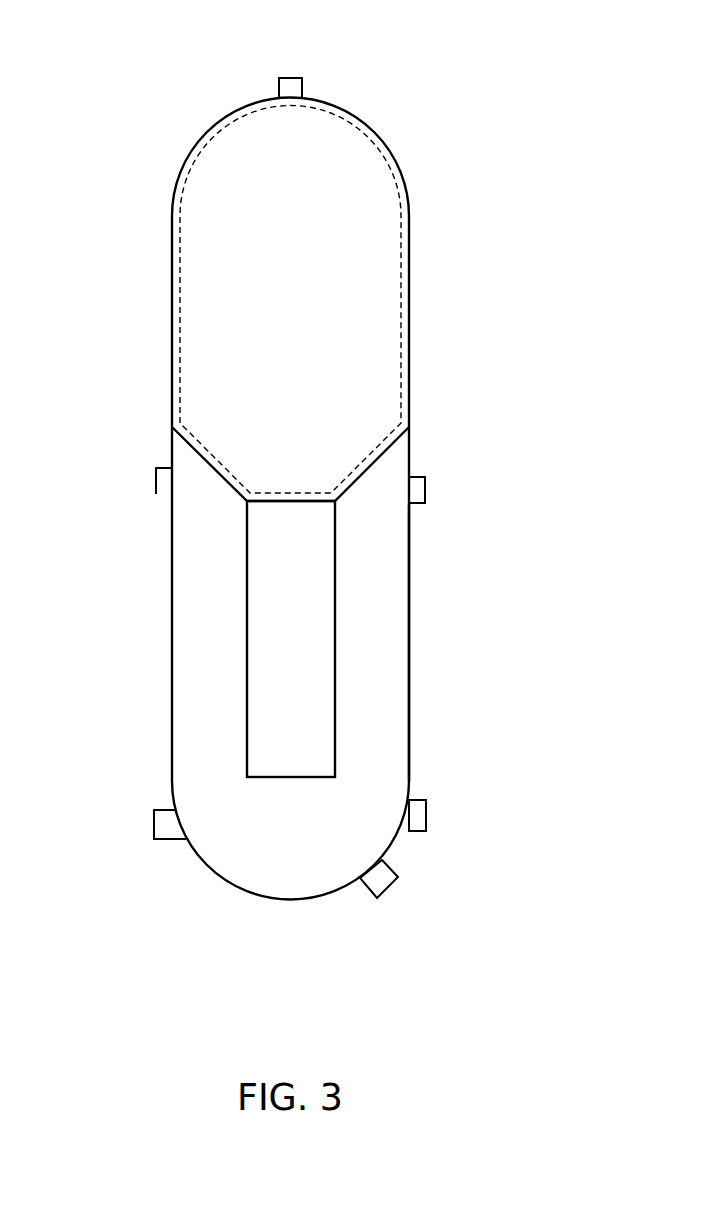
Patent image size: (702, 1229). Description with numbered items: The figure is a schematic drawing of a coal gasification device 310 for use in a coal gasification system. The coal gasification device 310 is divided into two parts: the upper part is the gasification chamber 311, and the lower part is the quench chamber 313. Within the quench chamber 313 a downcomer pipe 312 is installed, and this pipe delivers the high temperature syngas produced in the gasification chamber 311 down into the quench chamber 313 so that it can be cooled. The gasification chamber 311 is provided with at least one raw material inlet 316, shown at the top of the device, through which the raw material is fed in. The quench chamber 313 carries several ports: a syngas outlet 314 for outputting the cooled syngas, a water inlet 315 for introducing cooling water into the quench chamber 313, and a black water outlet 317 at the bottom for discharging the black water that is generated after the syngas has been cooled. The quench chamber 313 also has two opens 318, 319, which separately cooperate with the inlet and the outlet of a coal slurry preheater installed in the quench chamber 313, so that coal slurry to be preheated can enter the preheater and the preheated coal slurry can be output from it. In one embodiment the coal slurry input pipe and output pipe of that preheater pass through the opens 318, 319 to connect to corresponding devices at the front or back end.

The coal gasification device 310 is at (190, 158).
The gasification chamber 311 is at (385, 238).
The downcomer pipe 312 is at (277, 583).
The quench chamber 313 is at (393, 627).
The syngas outlet 314 is at (440, 490).
The water inlet 315 is at (136, 480).
The raw material inlet 316 is at (296, 62).
The black water outlet 317 is at (394, 904).
The open 318 is at (138, 823).
The open 319 is at (440, 815).